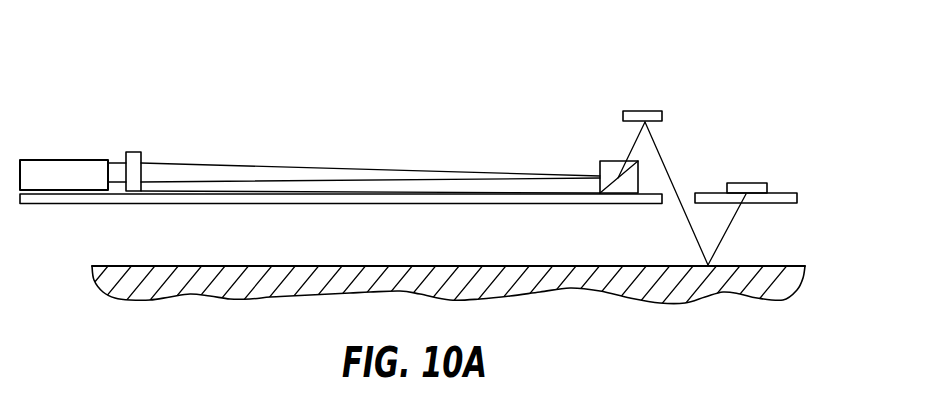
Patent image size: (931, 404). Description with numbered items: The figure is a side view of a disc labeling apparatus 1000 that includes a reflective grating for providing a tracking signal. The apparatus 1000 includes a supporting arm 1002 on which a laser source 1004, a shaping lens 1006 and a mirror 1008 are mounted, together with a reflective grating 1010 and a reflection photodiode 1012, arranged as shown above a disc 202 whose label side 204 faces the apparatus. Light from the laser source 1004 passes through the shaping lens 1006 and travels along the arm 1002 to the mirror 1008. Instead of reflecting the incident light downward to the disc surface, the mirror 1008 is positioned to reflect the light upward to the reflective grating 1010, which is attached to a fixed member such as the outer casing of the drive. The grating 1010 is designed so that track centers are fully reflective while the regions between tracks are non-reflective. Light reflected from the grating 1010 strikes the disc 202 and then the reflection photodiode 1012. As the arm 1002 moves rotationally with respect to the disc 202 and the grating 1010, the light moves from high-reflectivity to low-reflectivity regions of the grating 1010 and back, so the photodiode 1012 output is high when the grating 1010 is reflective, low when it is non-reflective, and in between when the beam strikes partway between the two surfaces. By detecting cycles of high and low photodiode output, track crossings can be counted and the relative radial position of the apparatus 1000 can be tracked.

The disc labeling apparatus 1000 is at (258, 69).
The supporting arm 1002 is at (52, 204).
The laser source 1004 is at (62, 148).
The shaping lens 1006 is at (141, 144).
The mirror 1008 is at (614, 198).
The reflective grating 1010 is at (651, 94).
The reflection photodiode 1012 is at (761, 175).
The label side 204 is at (437, 265).
The disc 202 is at (487, 282).